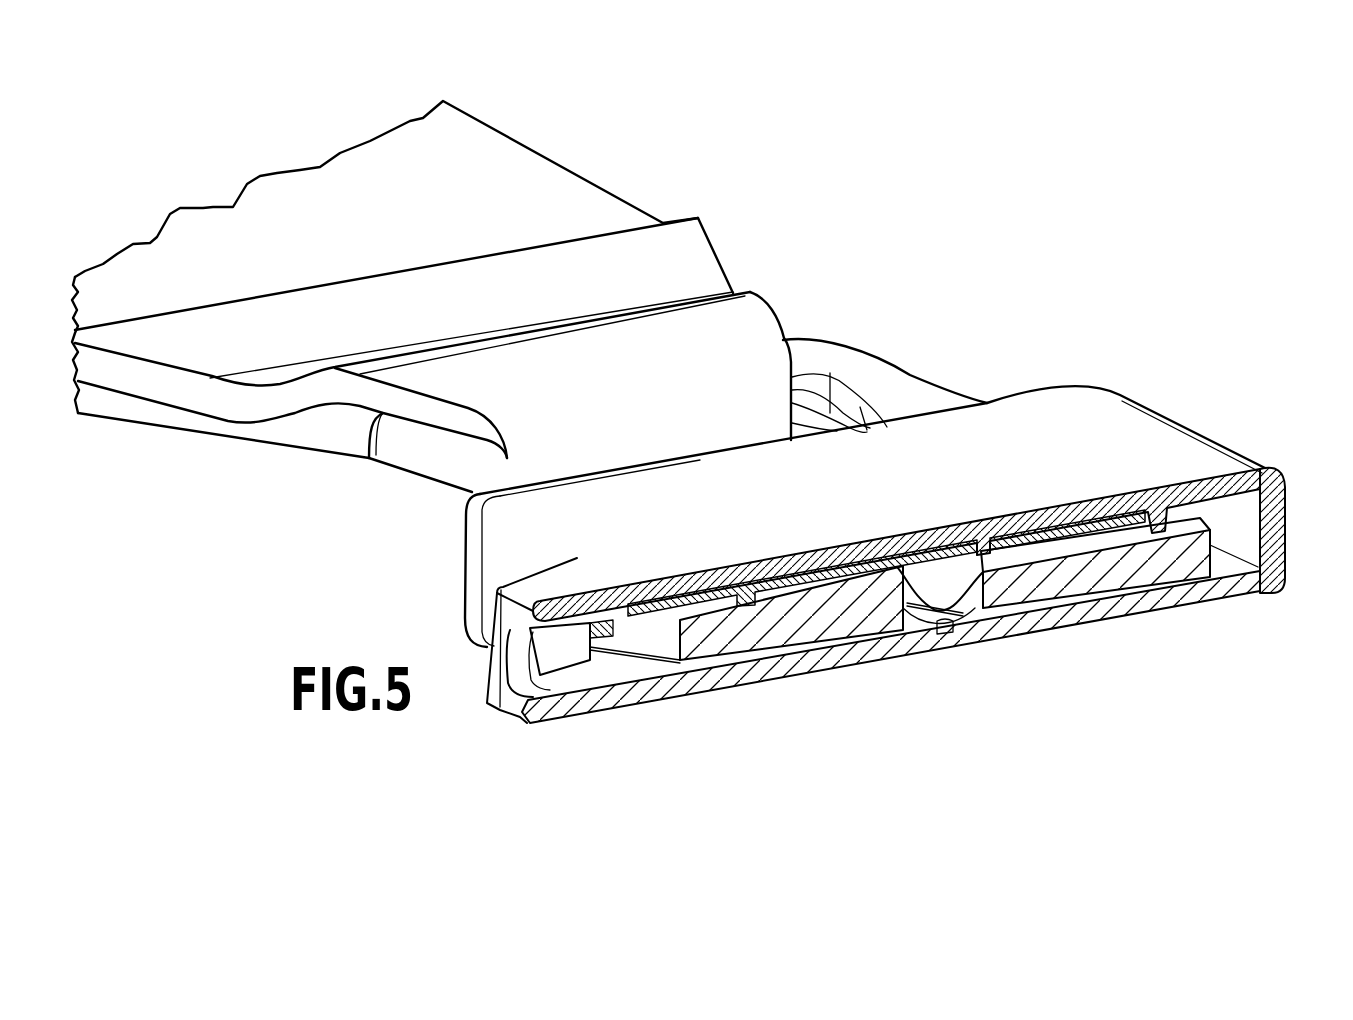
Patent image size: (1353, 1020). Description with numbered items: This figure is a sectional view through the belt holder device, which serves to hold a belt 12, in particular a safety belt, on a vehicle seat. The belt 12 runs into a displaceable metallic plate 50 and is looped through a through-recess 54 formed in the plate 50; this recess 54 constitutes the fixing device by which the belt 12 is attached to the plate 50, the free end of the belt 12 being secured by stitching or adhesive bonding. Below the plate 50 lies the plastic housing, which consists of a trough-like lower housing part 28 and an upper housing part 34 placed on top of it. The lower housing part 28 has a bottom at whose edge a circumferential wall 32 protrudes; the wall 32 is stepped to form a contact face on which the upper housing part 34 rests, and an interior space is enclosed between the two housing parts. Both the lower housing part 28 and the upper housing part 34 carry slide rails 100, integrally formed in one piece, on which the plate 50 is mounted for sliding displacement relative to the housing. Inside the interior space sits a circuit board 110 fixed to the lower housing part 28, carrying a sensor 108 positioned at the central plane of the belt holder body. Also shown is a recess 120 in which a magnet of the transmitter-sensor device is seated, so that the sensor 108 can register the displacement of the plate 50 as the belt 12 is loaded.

The belt 12 is at (515, 186).
The lower housing part 28 is at (1250, 470).
The circumferential wall 32 is at (1280, 542).
The upper housing part 34 is at (1140, 595).
The plate 50 is at (900, 386).
The through-recess 54 is at (813, 353).
The slide rails 100 is at (1185, 498).
The sensor 108 is at (977, 540).
The circuit board 110 is at (852, 577).
The recess 120 is at (1005, 636).